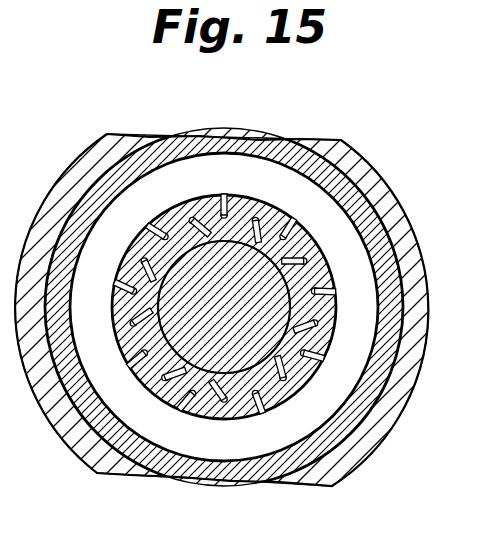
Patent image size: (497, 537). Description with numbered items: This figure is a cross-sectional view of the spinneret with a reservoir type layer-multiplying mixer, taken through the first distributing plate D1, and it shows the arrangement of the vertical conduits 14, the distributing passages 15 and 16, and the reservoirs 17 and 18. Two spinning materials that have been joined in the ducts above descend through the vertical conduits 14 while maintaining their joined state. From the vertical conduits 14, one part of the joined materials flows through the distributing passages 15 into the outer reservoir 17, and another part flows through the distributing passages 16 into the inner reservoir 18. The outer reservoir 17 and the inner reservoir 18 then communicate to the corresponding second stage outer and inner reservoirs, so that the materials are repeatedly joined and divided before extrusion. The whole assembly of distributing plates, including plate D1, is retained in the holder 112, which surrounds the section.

The vertical conduits 14 is at (231, 200).
The distributing passages 15 is at (176, 198).
The distributing passages 16 is at (214, 196).
The outer reservoir 17 is at (232, 447).
The inner reservoir 18 is at (248, 345).
The holder 112 is at (383, 421).
The distributing plate D1 is at (300, 140).